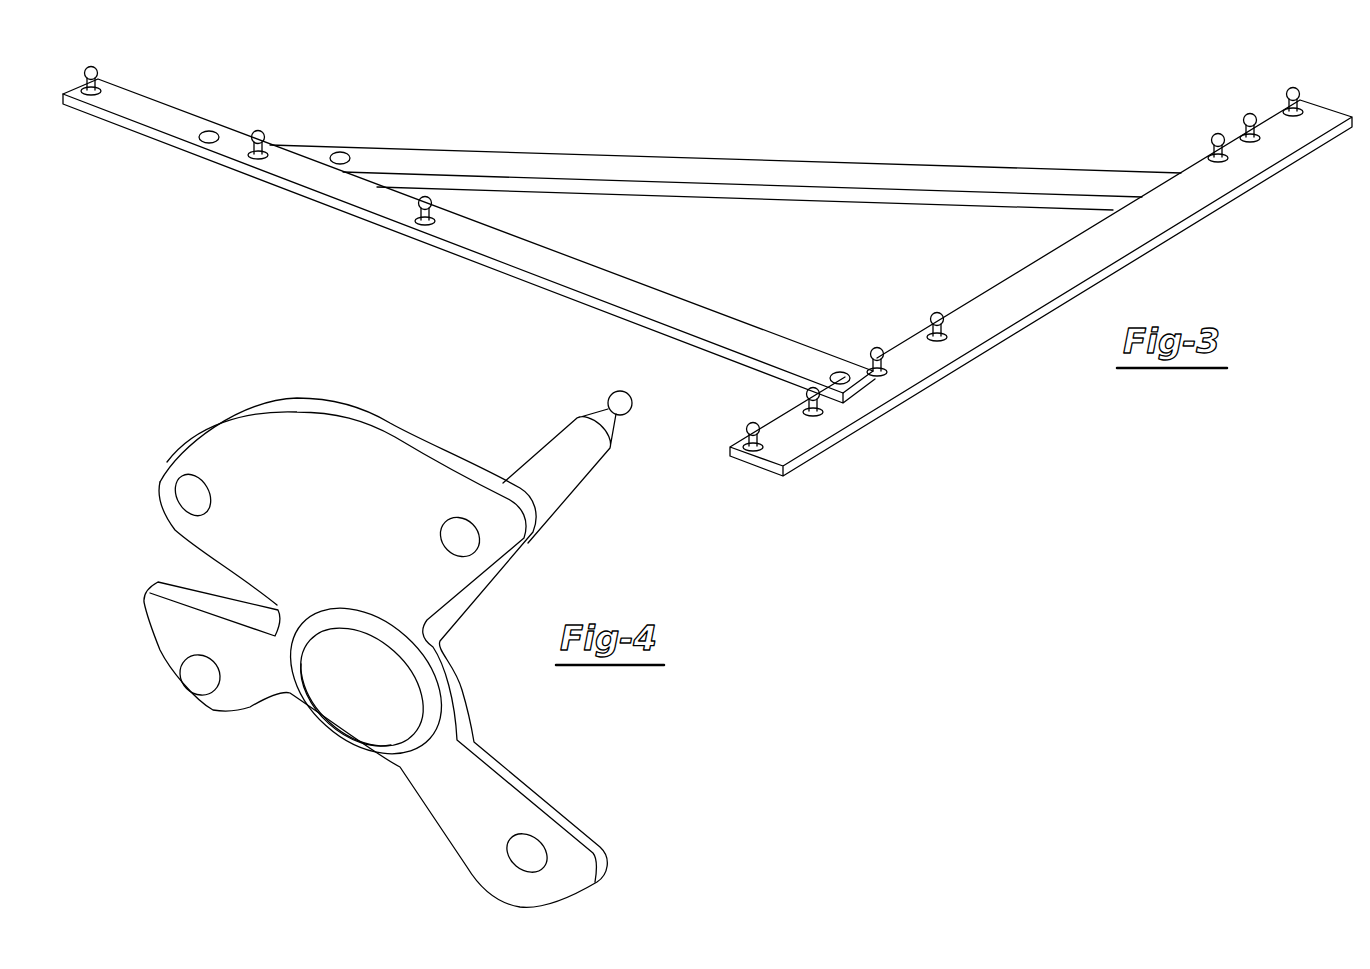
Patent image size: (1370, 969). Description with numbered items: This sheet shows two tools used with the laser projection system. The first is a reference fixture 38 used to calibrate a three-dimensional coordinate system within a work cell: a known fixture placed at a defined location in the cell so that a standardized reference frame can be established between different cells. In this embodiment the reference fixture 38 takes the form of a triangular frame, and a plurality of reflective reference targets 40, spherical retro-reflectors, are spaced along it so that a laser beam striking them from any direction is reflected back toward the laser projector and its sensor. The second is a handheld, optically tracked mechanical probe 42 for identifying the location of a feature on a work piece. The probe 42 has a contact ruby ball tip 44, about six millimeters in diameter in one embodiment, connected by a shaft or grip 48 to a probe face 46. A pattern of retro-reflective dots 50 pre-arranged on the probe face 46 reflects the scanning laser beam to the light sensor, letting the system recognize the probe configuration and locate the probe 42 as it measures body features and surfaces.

In FIG. 3, the reference fixture 38 is at (886, 146).
In FIG. 3, the reflective reference targets 40 is at (84, 72).
In FIG. 4, the probe 42 is at (165, 430).
In FIG. 4, the contact ruby ball tip 44 is at (612, 393).
In FIG. 4, the probe face 46 is at (313, 471).
In FIG. 4, the shaft or grip 48 is at (558, 440).
In FIG. 4, the retro-reflective dots 50 is at (212, 499).